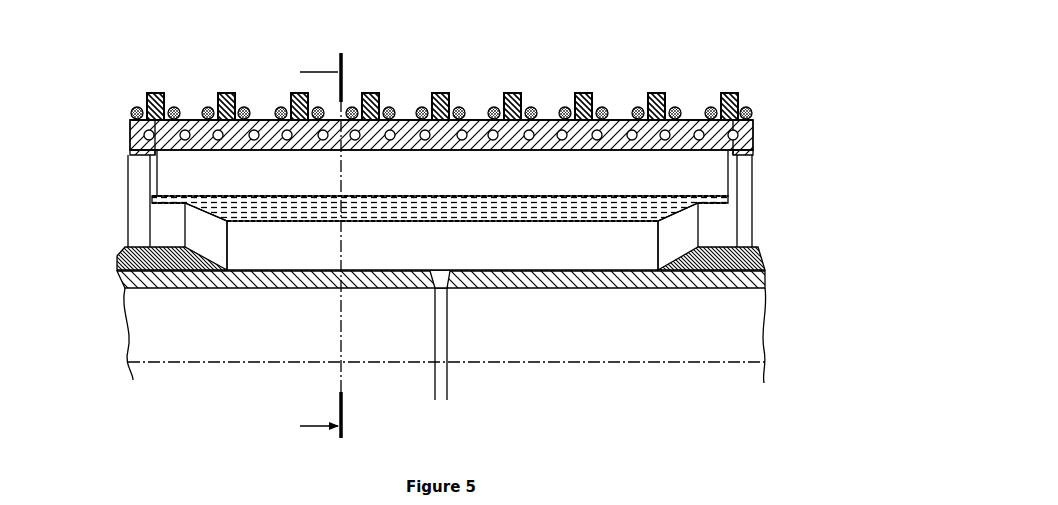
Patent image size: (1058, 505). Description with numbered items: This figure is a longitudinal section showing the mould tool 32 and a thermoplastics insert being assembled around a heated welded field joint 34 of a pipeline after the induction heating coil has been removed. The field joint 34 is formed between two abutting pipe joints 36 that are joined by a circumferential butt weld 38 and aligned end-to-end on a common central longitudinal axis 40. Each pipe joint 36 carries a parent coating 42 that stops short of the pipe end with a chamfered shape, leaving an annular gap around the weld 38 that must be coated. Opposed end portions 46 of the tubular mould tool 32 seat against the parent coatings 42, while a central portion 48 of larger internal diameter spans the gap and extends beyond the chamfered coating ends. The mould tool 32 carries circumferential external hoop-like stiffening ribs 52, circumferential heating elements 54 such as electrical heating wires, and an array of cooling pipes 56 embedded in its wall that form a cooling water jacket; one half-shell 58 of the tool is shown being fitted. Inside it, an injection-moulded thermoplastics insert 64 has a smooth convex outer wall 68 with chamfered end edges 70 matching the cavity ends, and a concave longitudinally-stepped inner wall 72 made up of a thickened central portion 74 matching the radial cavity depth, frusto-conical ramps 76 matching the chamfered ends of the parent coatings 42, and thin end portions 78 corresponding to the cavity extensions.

The mould tool 32 is at (653, 55).
The welded field joint 34 is at (410, 393).
The pipe joints 36 is at (200, 343).
The circumferential butt weld 38 is at (440, 332).
The central longitudinal axis 40 is at (703, 361).
The parent coating 42 is at (125, 247).
The end portions 46 is at (130, 137).
The central portion 48 is at (469, 157).
The stiffening ribs 52 is at (590, 94).
The heating elements 54 is at (421, 108).
The cooling pipes 56 is at (590, 141).
The half-shell 58 is at (268, 119).
The insert 64 is at (405, 208).
The convex outer wall 68 is at (627, 196).
The chamfered end edges 70 is at (150, 196).
The longitudinally-stepped inner wall 72 is at (440, 249).
The thickened central portion 74 is at (491, 236).
The frusto-conical ramps 76 is at (212, 235).
The thin end portions 78 is at (170, 218).